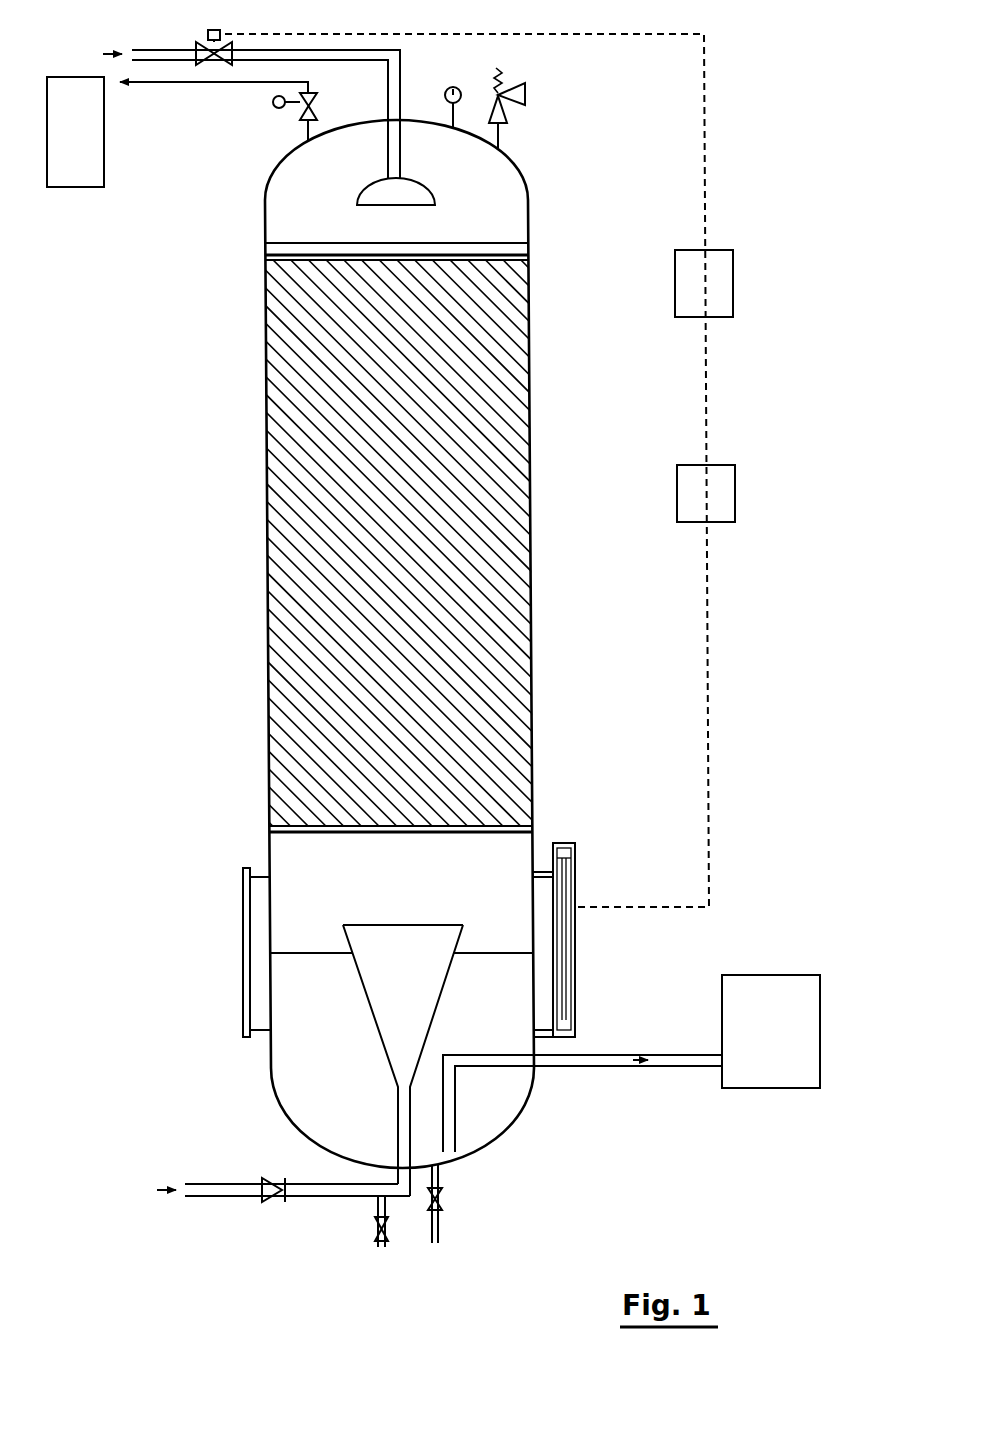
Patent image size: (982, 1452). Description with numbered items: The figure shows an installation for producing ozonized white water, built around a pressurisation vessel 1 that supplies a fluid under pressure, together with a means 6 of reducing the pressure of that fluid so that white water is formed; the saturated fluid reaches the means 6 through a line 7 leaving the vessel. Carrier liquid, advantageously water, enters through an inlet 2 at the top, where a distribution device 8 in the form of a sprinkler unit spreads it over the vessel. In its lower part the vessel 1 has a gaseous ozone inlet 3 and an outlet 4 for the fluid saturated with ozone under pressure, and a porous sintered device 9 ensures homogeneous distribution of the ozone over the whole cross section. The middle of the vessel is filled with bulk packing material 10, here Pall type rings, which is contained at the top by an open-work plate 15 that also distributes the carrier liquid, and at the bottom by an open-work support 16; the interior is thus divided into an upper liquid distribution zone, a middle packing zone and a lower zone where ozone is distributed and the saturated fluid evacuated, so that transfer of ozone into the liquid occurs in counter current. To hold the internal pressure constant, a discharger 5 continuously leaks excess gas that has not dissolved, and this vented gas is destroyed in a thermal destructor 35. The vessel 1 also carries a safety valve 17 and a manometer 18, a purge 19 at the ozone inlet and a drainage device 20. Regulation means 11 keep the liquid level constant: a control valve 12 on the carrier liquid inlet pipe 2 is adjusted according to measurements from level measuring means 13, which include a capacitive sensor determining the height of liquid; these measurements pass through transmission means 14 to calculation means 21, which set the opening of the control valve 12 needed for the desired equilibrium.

The pressurisation vessel 1 is at (257, 592).
The inlet 2 is at (388, 84).
The gaseous ozone inlet 3 is at (318, 1198).
The outlet 4 is at (456, 1117).
The discharger 5 is at (298, 115).
The means of reducing the pressure 6 is at (780, 982).
The discharge line 7 is at (675, 1068).
The distribution device 8 is at (362, 190).
The porous sintered device 9 is at (390, 1018).
The packing bed 10 is at (533, 613).
The regulation means 11 is at (603, 903).
The control valve 12 is at (214, 30).
The means for measuring the level 13 is at (577, 958).
The transmission means 14 is at (723, 495).
The open-work plate 15 is at (520, 251).
The support 16 is at (265, 826).
The safety valve 17 is at (510, 108).
The manometer 18 is at (449, 85).
The purge 19 is at (378, 1243).
The drainage device 20 is at (440, 1225).
The calculation means 21 is at (722, 282).
The thermal destructor 35 is at (92, 158).